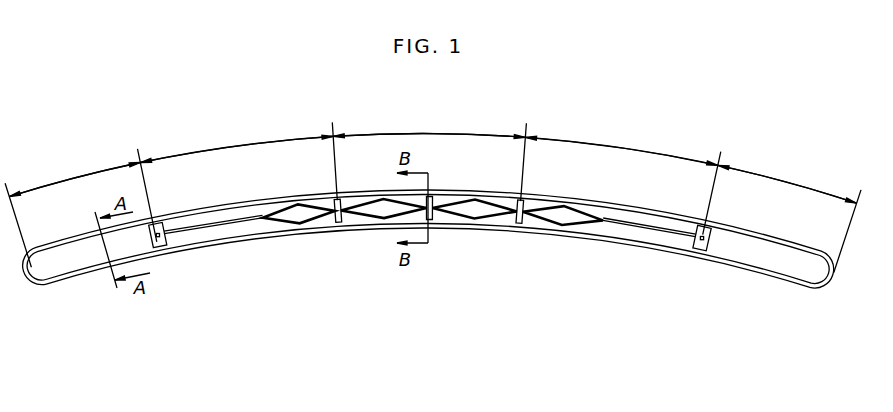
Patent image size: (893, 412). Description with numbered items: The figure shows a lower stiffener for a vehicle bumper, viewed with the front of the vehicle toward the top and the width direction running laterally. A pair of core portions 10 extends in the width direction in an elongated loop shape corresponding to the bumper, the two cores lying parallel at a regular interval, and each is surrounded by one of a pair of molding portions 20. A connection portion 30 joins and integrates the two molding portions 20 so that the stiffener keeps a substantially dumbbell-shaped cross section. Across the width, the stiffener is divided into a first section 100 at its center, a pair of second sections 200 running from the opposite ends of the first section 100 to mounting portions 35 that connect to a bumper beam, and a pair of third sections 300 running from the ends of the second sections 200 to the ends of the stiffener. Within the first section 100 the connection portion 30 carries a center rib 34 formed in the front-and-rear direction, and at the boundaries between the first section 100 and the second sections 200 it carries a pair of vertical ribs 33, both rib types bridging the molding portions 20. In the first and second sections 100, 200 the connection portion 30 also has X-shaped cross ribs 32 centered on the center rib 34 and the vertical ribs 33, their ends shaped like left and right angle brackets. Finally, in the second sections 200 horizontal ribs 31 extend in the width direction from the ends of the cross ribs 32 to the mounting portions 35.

The core portions 10 is at (88, 244).
The molding portions 20 is at (428, 262).
The connection portion 30 is at (755, 253).
The horizontal ribs 31 is at (217, 230).
The cross ribs 32 is at (313, 220).
The vertical ribs 33 is at (340, 232).
The center rib 34 is at (442, 213).
The mounting portions 35 is at (160, 248).
The first section 100 is at (429, 124).
The second sections 200 is at (429, 142).
The third sections 300 is at (432, 179).